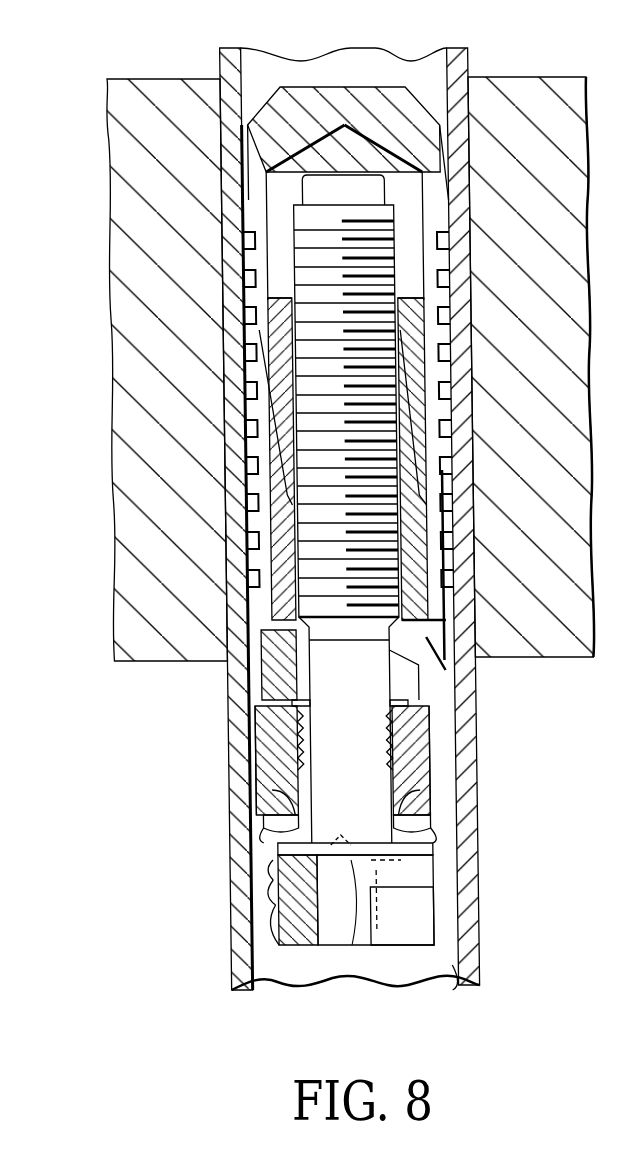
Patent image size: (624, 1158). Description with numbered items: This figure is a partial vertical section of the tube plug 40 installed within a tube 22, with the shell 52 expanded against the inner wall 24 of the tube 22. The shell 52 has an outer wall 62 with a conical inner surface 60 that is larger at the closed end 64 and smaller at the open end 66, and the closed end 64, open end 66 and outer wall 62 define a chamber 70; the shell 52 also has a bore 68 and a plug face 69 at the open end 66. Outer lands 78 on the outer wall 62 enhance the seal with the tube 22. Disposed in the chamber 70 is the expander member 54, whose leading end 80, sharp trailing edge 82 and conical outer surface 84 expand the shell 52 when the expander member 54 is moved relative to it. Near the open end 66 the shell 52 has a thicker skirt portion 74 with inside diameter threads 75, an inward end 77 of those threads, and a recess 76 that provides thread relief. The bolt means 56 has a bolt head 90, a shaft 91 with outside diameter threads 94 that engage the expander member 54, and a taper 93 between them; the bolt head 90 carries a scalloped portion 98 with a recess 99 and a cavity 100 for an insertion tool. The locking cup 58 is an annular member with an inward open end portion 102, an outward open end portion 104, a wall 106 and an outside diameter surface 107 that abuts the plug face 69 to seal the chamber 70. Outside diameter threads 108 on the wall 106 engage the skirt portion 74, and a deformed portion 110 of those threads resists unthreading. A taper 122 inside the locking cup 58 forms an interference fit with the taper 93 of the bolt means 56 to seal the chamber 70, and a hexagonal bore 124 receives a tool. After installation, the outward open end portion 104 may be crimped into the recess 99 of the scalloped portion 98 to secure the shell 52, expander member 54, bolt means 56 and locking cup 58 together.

The tube 22 is at (484, 970).
The inner wall 24 is at (445, 975).
The tube plug 40 is at (40, 213).
The shell 52 is at (350, 87).
The expander member 54 is at (445, 255).
The bolt means 56 is at (333, 650).
The locking cup 58 is at (462, 838).
The conical inner surface 60 is at (298, 172).
The outer wall 62 is at (243, 140).
The closed end 64 is at (252, 48).
The open end 66 is at (440, 792).
The bore 68 is at (410, 672).
The plug face 69 is at (256, 820).
The chamber 70 is at (392, 648).
The skirt portion 74 is at (440, 742).
The inside diameter threads 75 is at (404, 716).
The recess 76 is at (275, 702).
The inward end 77 is at (280, 718).
The outer lands 78 is at (243, 325).
The leading end 80 is at (283, 445).
The trailing edge 82 is at (262, 297).
The conical outer surface 84 is at (452, 330).
The bolt head 90 is at (300, 947).
The shaft 91 is at (447, 557).
The taper 93 is at (425, 850).
The outside diameter threads 94 is at (432, 522).
The scalloped portion 98 is at (285, 898).
The recess 99 is at (375, 947).
The cavity 100 is at (330, 868).
The inward open end portion 102 is at (299, 728).
The outward open end portion 104 is at (290, 935).
The wall 106 is at (258, 843).
The outside diameter surface 107 is at (272, 800).
The outside diameter threads 108 is at (440, 760).
The deformed portion 110 is at (283, 742).
The taper 122 is at (268, 870).
The hexagonal bore 124 is at (296, 702).